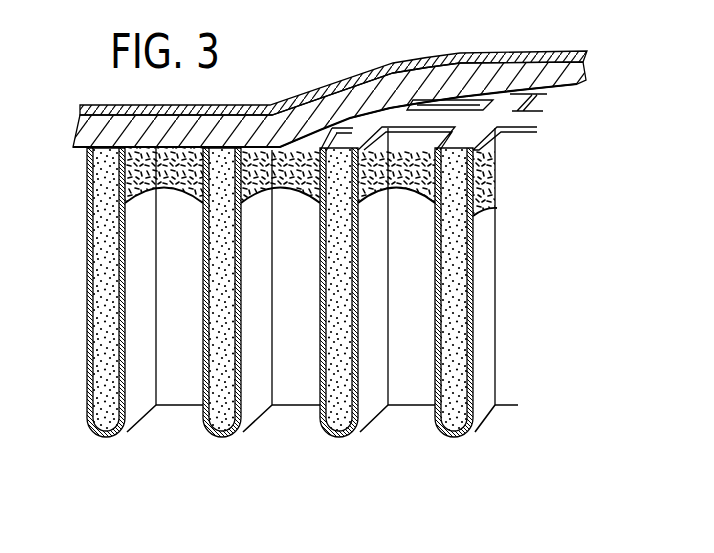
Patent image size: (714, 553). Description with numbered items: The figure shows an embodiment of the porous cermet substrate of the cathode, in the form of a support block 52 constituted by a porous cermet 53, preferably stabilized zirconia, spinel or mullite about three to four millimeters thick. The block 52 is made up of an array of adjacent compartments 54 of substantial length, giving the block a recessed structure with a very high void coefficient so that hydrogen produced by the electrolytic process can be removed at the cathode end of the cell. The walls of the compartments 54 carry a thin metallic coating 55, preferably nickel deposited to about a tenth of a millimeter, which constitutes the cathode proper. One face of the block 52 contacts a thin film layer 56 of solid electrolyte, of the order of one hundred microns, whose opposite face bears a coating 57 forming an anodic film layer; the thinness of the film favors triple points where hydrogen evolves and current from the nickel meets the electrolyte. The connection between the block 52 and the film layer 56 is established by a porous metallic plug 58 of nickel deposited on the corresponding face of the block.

The support block 52 is at (87, 330).
The porous cermet 53 is at (487, 116).
The adjacent compartments 54 is at (452, 240).
The thin metallic coating 55 is at (470, 103).
The film layer of solid electrolyte 56 is at (453, 78).
The coating forming an anodic film layer 57 is at (279, 145).
The porous metallic plug 58 is at (313, 157).